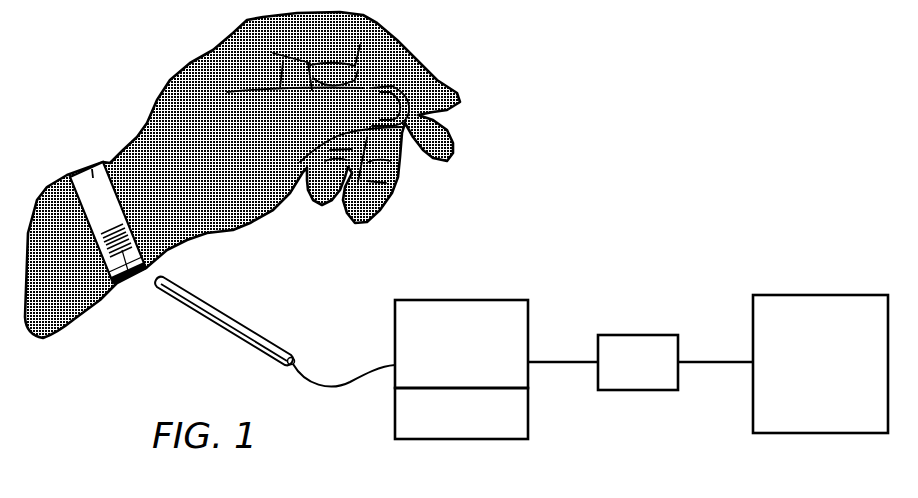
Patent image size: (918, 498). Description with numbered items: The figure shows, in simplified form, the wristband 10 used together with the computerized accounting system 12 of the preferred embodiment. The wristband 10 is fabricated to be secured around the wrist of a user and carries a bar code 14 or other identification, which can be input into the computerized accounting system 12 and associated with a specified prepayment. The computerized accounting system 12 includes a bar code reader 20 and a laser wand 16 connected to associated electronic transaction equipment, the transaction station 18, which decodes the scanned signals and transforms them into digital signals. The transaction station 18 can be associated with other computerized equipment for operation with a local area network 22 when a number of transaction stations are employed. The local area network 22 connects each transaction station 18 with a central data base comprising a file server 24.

The wristband 10 is at (100, 163).
The computerized accounting system 12 is at (640, 268).
The bar code 14 is at (127, 288).
The laser wand 16 is at (240, 326).
The transaction station 18 is at (475, 300).
The bar code reader 20 is at (507, 423).
The local area network 22 is at (640, 335).
The file server 24 is at (818, 295).